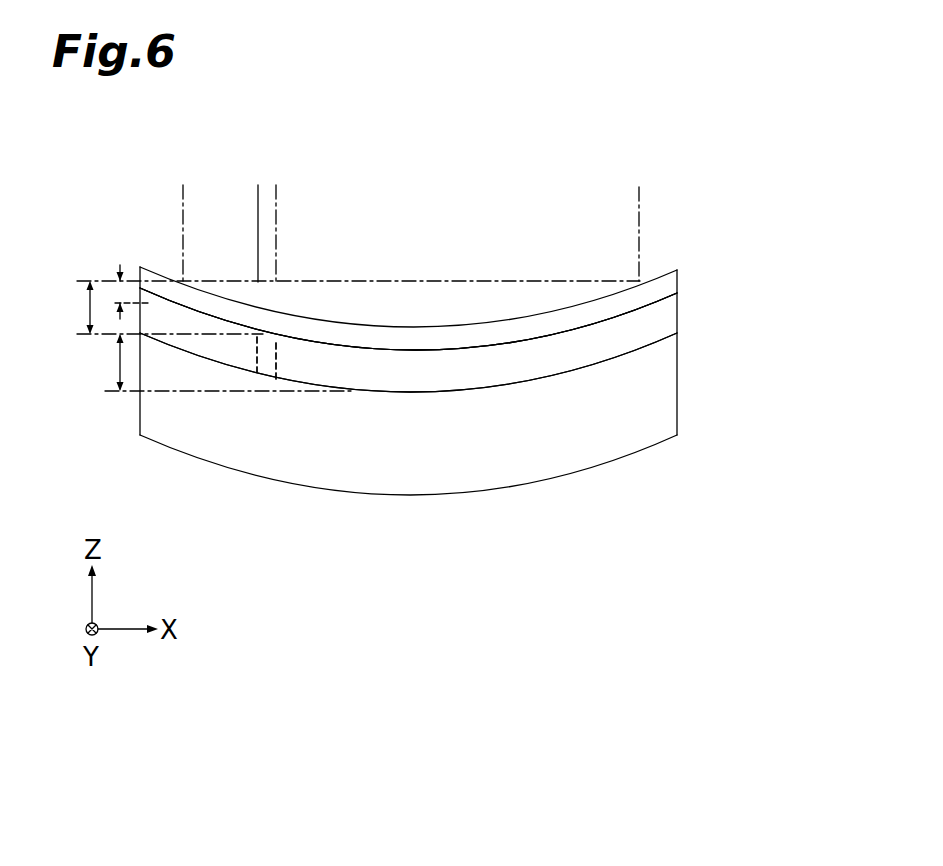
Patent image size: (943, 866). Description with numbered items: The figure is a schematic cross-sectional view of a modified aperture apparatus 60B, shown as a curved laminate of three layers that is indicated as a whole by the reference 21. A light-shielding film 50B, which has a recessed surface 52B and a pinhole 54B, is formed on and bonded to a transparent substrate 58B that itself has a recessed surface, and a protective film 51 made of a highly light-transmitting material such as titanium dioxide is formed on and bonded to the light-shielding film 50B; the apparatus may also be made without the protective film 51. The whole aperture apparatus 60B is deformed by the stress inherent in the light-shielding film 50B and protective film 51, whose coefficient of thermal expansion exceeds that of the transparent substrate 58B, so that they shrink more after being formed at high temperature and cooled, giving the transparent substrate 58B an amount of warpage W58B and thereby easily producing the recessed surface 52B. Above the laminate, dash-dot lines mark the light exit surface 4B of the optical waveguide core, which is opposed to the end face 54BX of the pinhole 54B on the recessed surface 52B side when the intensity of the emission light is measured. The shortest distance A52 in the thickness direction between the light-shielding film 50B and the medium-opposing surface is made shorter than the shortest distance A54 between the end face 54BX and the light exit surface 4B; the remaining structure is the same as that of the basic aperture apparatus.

The piezoelectric vibrating element 21 is at (613, 153).
The light exit surface 4B is at (264, 288).
The protective film 51 is at (668, 285).
The light-shielding film 50B is at (667, 318).
The recessed surface 52B is at (565, 332).
The pinhole 54B is at (275, 351).
The end face 54BX is at (257, 337).
The transparent substrate 58B is at (667, 392).
The aperture apparatus 60B is at (760, 275).
The shortest distance A52 is at (119, 286).
The shortest distance A54 is at (65, 307).
The amount of warpage W58B is at (82, 362).